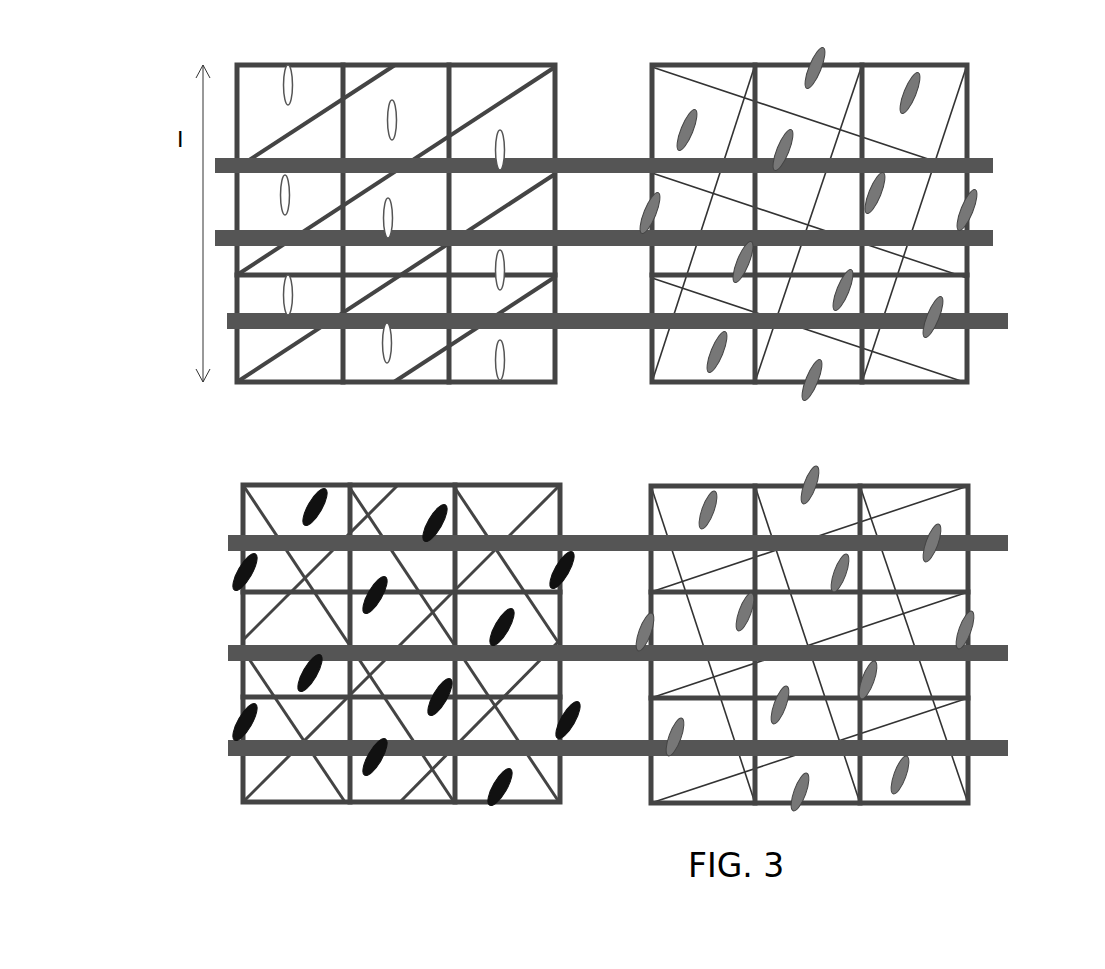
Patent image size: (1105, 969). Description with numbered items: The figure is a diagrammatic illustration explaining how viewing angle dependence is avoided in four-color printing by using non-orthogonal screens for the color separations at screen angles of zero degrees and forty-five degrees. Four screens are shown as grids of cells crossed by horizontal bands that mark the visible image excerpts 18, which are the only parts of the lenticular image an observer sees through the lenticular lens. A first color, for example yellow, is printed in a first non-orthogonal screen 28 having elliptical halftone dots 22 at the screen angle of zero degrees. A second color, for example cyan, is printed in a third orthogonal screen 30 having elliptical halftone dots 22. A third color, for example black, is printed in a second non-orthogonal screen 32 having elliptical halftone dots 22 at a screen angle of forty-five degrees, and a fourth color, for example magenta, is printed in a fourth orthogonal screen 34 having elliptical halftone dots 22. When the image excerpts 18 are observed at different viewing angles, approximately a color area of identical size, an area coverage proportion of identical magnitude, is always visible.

The image excerpts 18 is at (215, 742).
The elliptical halftone dots 22 is at (505, 262).
The first non-orthogonal screen 28 is at (512, 93).
The third orthogonal screen 30 is at (940, 368).
The second non-orthogonal screen 32 is at (475, 508).
The fourth orthogonal screen 34 is at (945, 708).